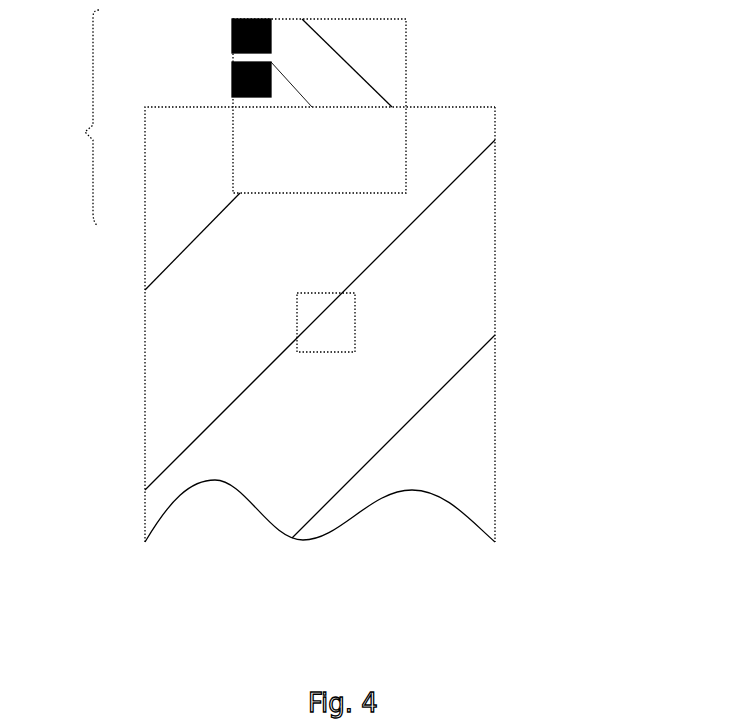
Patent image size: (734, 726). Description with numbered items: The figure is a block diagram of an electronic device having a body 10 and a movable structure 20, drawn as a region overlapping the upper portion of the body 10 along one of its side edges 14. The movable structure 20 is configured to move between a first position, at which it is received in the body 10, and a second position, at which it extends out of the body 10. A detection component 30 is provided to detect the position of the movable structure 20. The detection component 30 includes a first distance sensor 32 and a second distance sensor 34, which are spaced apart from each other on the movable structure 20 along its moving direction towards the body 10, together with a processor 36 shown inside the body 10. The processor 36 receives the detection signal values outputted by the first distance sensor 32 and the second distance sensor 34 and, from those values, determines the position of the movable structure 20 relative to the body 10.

The body 10 is at (185, 415).
The side edge of substrate 14 is at (495, 217).
The movable structure 20 is at (350, 58).
The detection component 30 is at (76, 118).
The first distance sensor 32 is at (232, 33).
The second distance sensor 34 is at (232, 82).
The processor 36 is at (337, 308).